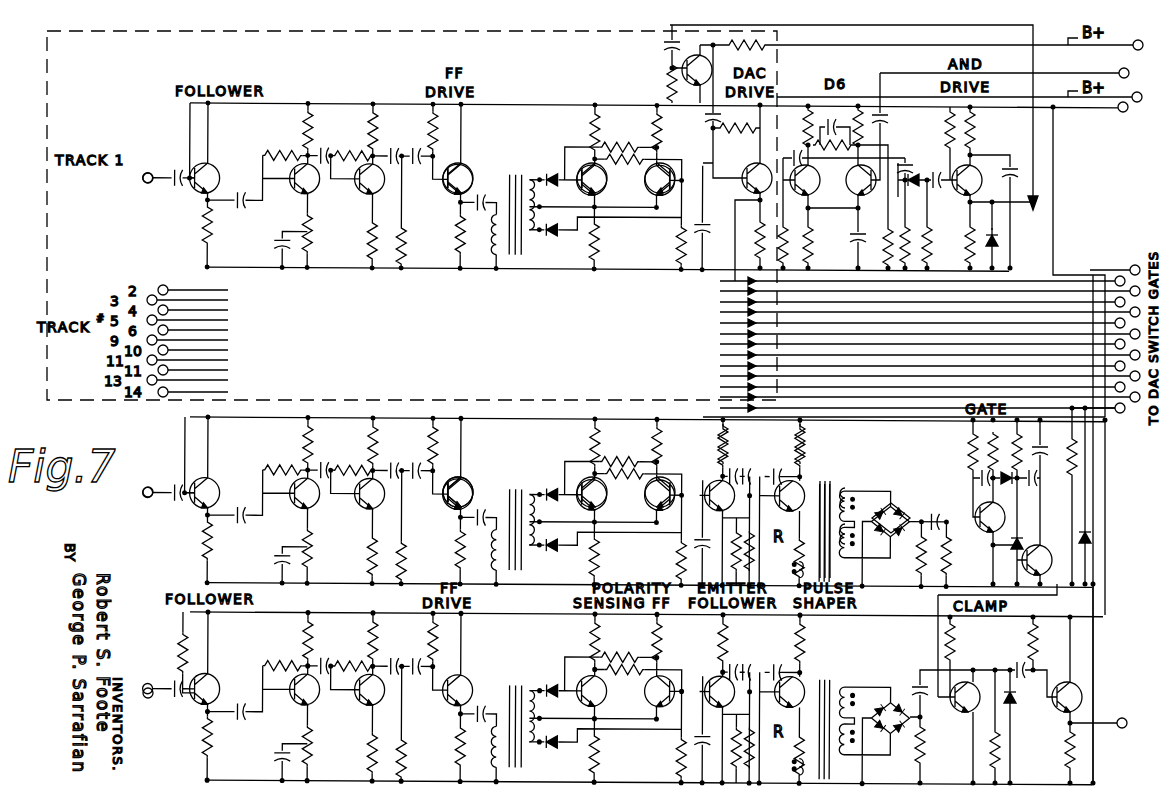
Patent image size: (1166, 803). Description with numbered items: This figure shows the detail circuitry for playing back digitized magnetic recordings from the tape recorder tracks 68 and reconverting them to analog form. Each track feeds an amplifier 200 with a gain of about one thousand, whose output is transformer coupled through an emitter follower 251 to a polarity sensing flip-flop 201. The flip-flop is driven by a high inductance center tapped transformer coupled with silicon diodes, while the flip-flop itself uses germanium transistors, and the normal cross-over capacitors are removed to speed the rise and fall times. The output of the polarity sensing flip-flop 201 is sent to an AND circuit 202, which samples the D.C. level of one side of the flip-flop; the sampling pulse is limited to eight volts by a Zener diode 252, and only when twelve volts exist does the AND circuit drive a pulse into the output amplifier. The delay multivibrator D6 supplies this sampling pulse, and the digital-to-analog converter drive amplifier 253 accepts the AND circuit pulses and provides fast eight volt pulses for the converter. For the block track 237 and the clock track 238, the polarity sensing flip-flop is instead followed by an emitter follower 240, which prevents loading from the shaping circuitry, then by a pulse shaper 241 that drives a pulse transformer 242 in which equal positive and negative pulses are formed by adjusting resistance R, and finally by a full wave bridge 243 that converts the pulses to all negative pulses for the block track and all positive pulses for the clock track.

The tape recorder tracks 68 is at (150, 282).
The amplifier 200 is at (388, 100).
The polarity sensing flip-flop 201 is at (622, 101).
The AND circuit 202 is at (662, 70).
The digital-to-analog converter drive amplifier 253 is at (777, 57).
The Zener diode 252 is at (996, 240).
The emitter follower 251 is at (465, 468).
The emitter follower 240 is at (716, 432).
The pulse shaper 241 is at (799, 410).
The pulse transformer 242 is at (833, 482).
The full wave bridge 243 is at (874, 484).
The block track No. 7 237 is at (124, 515).
The clock track No. 8 238 is at (156, 722).